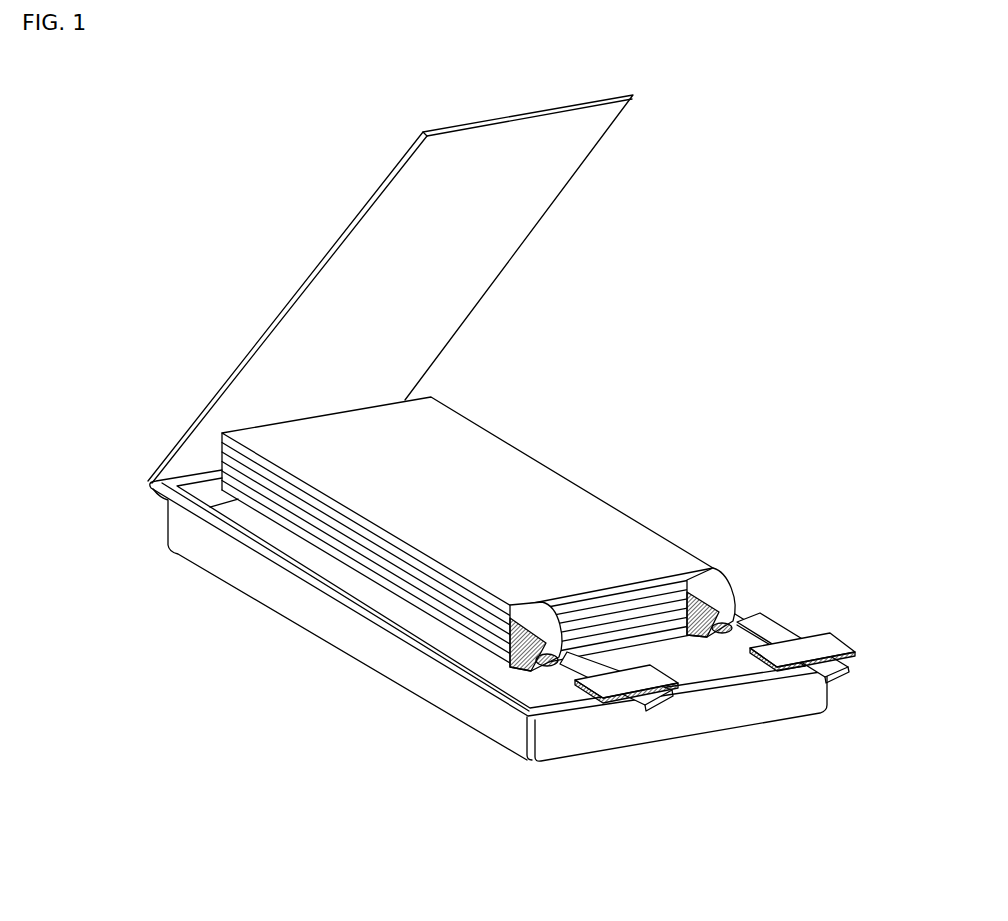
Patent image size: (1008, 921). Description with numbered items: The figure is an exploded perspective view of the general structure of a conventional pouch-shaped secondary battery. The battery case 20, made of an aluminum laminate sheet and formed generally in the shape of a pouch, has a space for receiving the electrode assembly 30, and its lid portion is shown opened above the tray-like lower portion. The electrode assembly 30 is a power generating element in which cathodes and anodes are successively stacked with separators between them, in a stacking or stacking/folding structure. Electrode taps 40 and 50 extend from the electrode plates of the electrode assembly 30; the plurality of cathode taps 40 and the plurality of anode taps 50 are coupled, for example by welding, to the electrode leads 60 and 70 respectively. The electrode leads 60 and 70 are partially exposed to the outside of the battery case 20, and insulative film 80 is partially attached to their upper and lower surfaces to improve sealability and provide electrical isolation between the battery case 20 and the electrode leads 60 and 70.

The battery case 20 is at (148, 481).
The electrode assembly 30 is at (576, 429).
The electrode tap 40 is at (545, 649).
The electrode tap 50 is at (733, 598).
The electrode lead 60 is at (575, 681).
The electrode lead 70 is at (800, 627).
The insulative film 80 is at (588, 693).